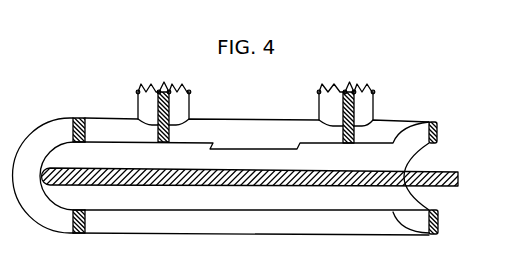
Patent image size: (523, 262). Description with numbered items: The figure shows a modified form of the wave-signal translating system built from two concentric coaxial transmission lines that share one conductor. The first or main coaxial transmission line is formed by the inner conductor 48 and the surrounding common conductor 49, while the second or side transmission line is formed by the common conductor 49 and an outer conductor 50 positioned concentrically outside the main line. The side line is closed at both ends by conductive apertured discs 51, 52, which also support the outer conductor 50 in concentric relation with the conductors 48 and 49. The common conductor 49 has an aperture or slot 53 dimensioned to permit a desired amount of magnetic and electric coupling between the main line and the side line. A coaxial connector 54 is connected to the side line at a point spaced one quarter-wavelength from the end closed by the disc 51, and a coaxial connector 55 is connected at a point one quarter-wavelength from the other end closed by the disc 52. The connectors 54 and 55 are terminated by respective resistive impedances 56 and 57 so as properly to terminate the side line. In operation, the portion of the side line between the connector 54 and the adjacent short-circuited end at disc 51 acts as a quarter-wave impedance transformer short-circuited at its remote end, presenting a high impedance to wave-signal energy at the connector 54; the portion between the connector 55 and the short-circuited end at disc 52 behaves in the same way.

The inner conductor of main coaxial transmission line 48 is at (146, 168).
The common conductor 49 is at (50, 150).
The outer conductor 50 is at (116, 118).
The conductive apertured disc 51 is at (75, 121).
The conductive apertured disc 52 is at (440, 131).
The aperture or slot 53 is at (225, 148).
The coaxial connector 54 is at (192, 101).
The coaxial connector 55 is at (372, 106).
The resistive impedance 56 is at (168, 90).
The resistive impedance 57 is at (354, 90).